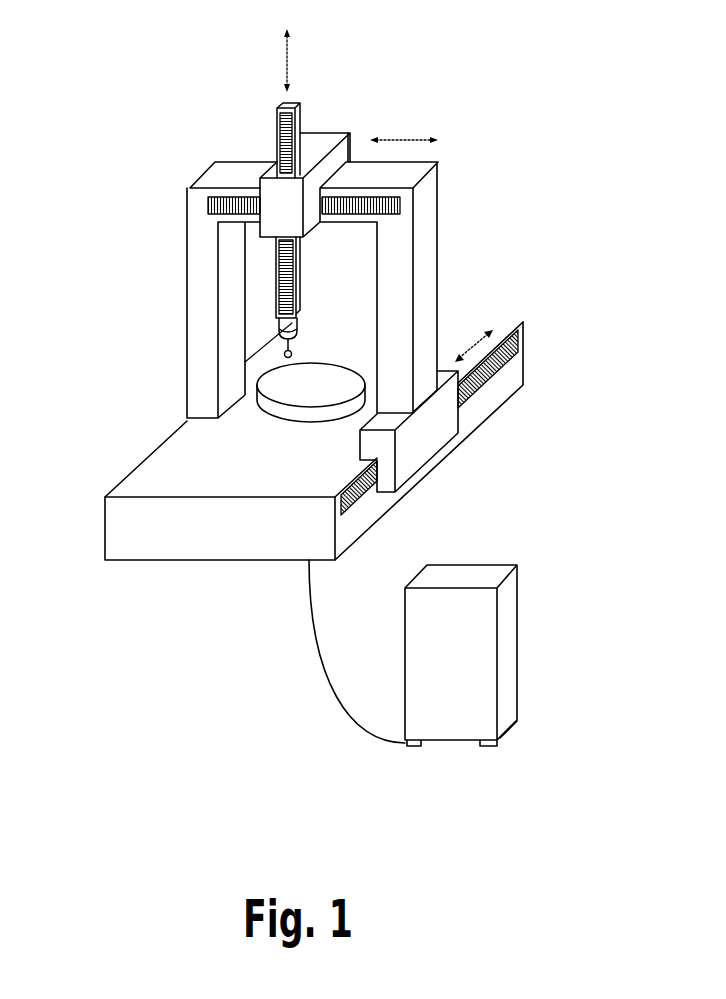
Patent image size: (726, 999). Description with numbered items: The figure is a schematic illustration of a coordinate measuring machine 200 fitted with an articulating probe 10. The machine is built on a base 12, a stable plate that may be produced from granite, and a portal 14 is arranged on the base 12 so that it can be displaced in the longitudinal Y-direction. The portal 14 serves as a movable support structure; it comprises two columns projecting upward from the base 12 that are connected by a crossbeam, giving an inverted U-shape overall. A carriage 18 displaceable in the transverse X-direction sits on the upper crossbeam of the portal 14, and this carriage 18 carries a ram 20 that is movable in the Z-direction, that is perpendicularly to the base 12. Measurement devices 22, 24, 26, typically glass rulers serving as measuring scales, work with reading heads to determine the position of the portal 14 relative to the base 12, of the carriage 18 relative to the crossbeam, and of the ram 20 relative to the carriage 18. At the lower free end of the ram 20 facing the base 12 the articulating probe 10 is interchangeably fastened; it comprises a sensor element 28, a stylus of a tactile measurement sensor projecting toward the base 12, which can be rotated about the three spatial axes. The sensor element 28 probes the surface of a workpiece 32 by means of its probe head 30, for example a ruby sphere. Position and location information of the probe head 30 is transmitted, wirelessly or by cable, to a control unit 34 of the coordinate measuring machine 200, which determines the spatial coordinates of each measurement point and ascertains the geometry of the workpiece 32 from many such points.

The articulating probe 10 is at (297, 325).
The base 12 is at (152, 482).
The portal 14 is at (205, 265).
The carriage 18 is at (262, 176).
The ram 20 is at (284, 106).
The measurement device 22 is at (400, 207).
The measurement device 24 is at (496, 381).
The measurement device 26 is at (300, 130).
The sensor element 28 is at (294, 349).
The probe head 30 is at (283, 337).
The workpiece 32 is at (307, 418).
The control unit 34 is at (461, 574).
The coordinate measuring machine 200 is at (458, 140).